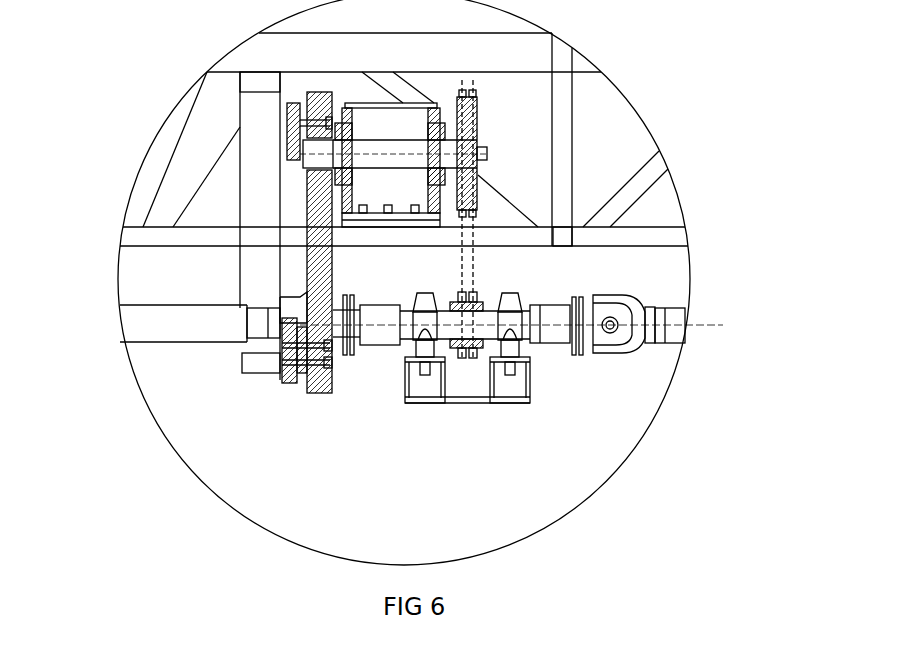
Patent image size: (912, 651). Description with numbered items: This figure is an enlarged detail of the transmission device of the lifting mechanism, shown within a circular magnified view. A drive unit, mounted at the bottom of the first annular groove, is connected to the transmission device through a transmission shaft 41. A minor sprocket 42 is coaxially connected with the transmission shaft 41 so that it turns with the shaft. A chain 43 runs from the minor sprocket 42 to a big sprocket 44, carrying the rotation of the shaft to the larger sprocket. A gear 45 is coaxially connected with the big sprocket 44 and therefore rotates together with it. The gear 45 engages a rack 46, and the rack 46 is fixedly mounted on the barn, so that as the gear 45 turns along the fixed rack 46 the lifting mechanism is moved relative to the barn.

The transmission shaft 41 is at (692, 343).
The minor sprocket 42 is at (587, 261).
The chain 43 is at (609, 220).
The big sprocket 44 is at (595, 120).
The gear 45 is at (191, 209).
The rack 46 is at (186, 242).